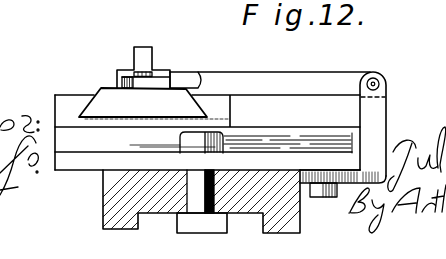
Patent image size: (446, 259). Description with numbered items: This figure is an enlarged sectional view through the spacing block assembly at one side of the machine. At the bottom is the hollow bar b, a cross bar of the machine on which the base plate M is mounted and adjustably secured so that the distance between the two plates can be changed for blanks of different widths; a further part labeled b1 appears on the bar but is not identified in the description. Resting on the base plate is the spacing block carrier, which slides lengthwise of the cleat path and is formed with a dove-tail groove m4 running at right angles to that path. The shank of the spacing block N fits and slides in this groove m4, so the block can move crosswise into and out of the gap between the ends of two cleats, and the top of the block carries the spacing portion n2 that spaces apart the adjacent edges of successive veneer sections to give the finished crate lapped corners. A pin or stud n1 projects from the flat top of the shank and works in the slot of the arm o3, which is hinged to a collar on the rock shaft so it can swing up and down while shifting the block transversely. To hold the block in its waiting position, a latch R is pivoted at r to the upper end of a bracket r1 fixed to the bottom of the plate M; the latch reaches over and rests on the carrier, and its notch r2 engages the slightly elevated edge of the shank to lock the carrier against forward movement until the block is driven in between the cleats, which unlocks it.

The base plate M is at (89, 162).
The spacing portion n2 is at (55, 106).
The latch R is at (330, 78).
The dove-tail groove m4 is at (139, 117).
The spacing block N is at (133, 67).
The pin or stud n1 is at (146, 72).
The arm o3 is at (120, 80).
The notch r2 is at (188, 91).
The pivot r is at (402, 48).
The bracket r1 is at (407, 99).
The hollow bar b is at (110, 222).
The slot in base block b1 is at (197, 198).